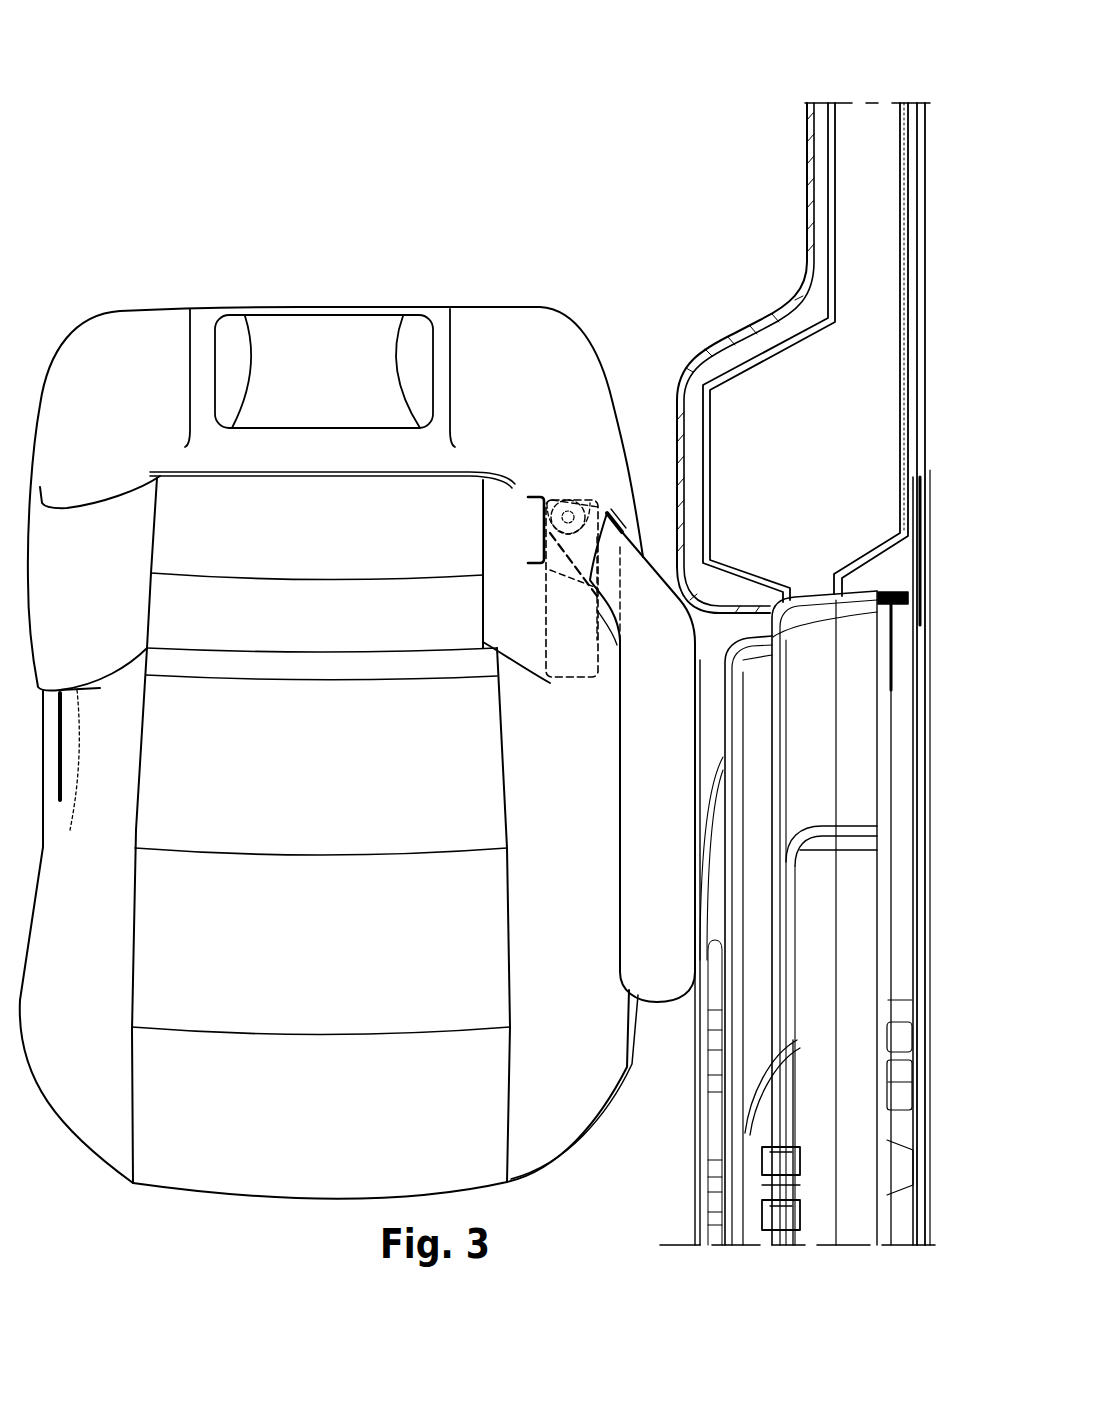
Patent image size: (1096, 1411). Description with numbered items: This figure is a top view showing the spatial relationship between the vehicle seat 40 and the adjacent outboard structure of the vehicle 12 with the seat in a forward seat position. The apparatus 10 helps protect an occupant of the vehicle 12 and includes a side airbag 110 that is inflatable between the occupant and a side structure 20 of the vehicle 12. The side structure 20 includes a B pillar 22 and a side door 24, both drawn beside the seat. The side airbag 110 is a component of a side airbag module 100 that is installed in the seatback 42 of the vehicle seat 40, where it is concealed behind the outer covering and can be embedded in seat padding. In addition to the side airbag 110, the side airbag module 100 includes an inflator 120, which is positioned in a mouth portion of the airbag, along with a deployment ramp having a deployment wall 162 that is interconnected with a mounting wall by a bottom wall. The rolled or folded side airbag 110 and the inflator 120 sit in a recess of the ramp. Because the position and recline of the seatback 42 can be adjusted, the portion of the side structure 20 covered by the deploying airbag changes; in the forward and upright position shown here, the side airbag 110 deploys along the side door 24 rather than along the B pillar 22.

The apparatus 10 is at (592, 484).
The vehicle 12 is at (178, 1259).
The side structure 20 is at (853, 86).
The B pillar 22 is at (737, 306).
The side door 24 is at (838, 658).
The vehicle seat 40 is at (90, 1201).
The seatback 42 is at (537, 352).
The side airbag module 100 is at (652, 549).
The side airbag 110 is at (620, 773).
The inflator 120 is at (567, 512).
The deployment wall 162 is at (610, 515).